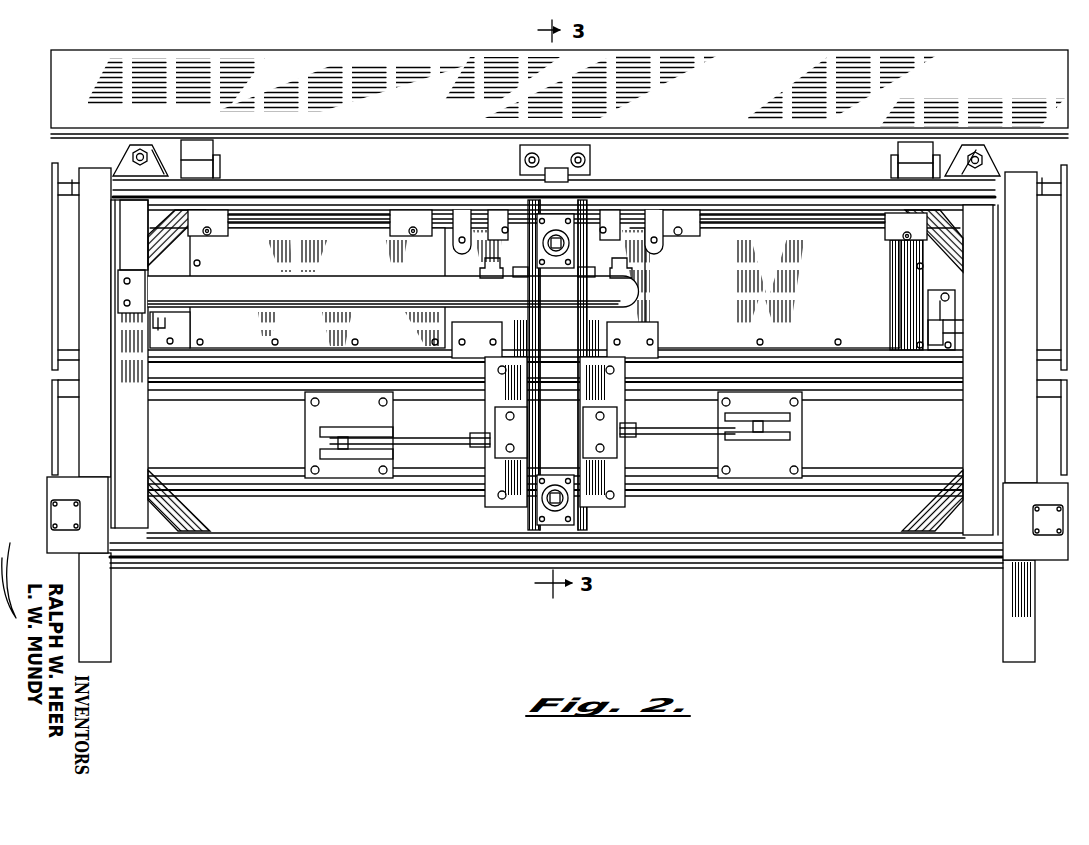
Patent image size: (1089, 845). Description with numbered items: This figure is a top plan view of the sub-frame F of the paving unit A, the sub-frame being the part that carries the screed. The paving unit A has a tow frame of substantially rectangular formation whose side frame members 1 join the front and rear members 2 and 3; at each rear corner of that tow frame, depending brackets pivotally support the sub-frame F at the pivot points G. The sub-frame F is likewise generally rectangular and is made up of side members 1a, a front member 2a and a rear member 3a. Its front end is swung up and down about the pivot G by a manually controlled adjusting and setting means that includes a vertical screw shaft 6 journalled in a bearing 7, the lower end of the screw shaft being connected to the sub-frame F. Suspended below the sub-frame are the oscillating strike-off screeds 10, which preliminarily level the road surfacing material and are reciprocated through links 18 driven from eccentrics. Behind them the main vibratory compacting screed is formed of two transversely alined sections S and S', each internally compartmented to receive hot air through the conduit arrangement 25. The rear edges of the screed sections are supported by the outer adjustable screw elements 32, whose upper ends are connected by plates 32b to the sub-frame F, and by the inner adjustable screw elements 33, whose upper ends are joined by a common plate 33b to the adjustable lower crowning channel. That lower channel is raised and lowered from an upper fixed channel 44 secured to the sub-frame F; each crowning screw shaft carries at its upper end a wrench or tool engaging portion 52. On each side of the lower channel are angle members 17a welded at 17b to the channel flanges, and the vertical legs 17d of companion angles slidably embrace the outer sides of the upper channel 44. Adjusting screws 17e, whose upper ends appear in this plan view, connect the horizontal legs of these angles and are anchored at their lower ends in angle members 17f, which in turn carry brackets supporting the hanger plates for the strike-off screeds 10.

The side frame members 1 is at (97, 414).
The side members 1a is at (147, 432).
The front member 2 is at (190, 556).
The front member 2a is at (312, 570).
The rear member 3 is at (244, 187).
The rear member 3a is at (362, 179).
The vertical screw shaft 6 is at (75, 512).
The bearing 7 is at (940, 180).
The oscillating strike-off screeds 10 is at (262, 488).
The angle members 17a is at (500, 474).
The weld 17b is at (486, 454).
The vertical legs 17d is at (522, 408).
The adjusting screws 17e is at (500, 374).
The angle members 17f is at (630, 455).
The links 18 is at (441, 444).
The conduit arrangement 25 is at (402, 302).
The outer adjustable screw elements 32 is at (129, 160).
The plates 32b is at (151, 151).
The inner adjustable screw elements 33 is at (524, 158).
The common plate 33b is at (560, 150).
The upper fixed support or channel 44 is at (575, 392).
The wrench or tool engaging portion 52 is at (571, 246).
The paving unit A is at (83, 289).
The sub-frame F is at (177, 171).
The pivot points G is at (75, 182).
The screed section S is at (326, 284).
The screed section S' is at (767, 284).